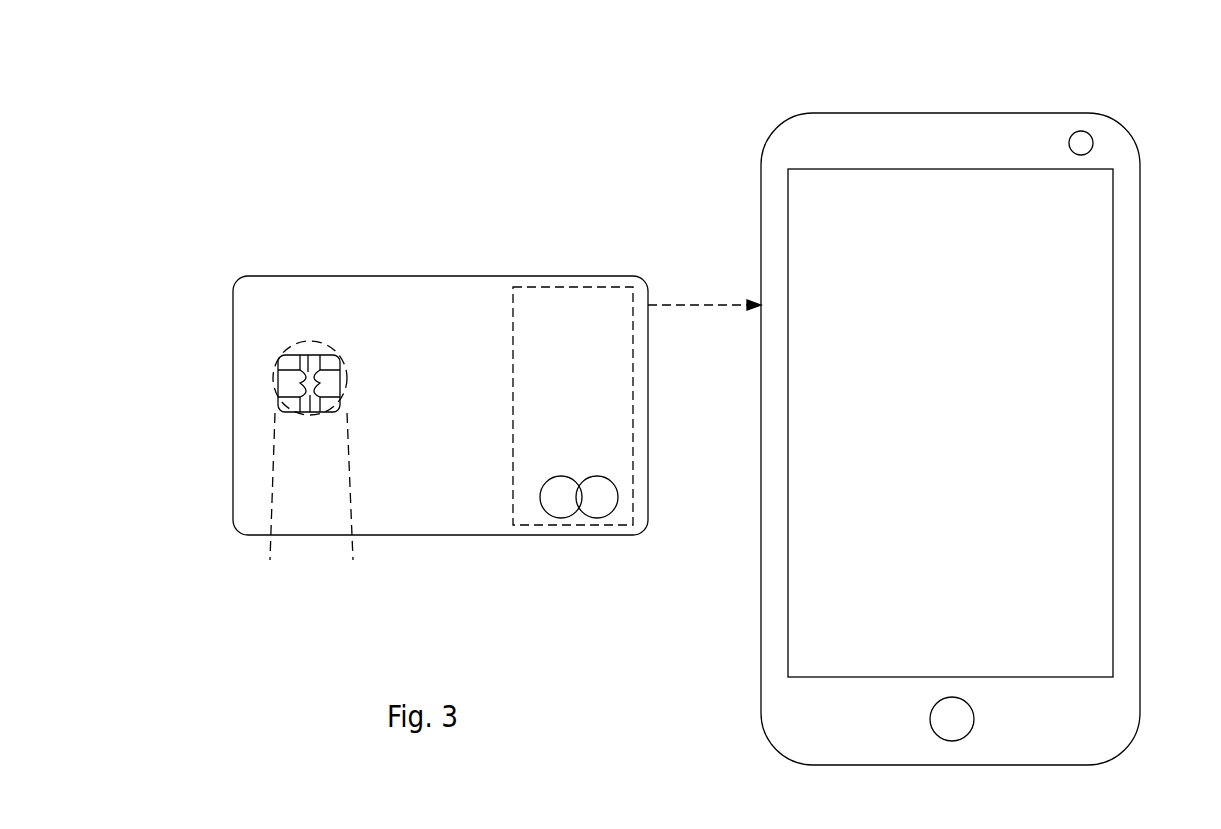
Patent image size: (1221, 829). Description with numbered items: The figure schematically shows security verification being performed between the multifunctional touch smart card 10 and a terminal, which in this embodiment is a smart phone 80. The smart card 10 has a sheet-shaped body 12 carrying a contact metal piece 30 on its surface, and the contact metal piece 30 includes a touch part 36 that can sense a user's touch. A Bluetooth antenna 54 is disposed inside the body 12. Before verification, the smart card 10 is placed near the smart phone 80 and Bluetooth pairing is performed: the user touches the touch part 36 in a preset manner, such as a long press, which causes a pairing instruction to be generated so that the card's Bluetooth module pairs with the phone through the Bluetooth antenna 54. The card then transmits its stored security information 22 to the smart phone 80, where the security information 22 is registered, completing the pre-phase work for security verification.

The multifunctional touch smart card 10 is at (442, 329).
The body 12 is at (446, 268).
The contact metal piece 30 is at (342, 360).
The touch part 36 is at (290, 357).
The Bluetooth antenna 54 is at (587, 287).
The security information 22 is at (705, 303).
The smart phone 80 is at (1127, 113).